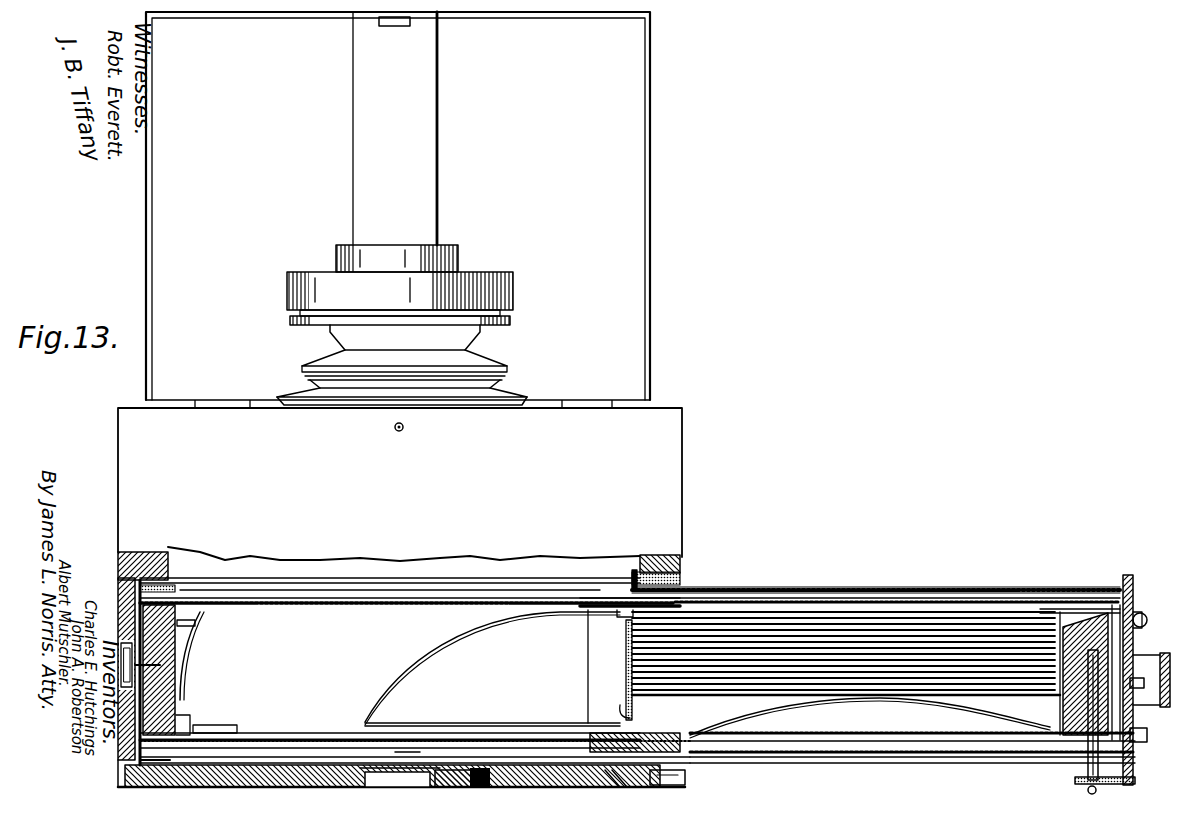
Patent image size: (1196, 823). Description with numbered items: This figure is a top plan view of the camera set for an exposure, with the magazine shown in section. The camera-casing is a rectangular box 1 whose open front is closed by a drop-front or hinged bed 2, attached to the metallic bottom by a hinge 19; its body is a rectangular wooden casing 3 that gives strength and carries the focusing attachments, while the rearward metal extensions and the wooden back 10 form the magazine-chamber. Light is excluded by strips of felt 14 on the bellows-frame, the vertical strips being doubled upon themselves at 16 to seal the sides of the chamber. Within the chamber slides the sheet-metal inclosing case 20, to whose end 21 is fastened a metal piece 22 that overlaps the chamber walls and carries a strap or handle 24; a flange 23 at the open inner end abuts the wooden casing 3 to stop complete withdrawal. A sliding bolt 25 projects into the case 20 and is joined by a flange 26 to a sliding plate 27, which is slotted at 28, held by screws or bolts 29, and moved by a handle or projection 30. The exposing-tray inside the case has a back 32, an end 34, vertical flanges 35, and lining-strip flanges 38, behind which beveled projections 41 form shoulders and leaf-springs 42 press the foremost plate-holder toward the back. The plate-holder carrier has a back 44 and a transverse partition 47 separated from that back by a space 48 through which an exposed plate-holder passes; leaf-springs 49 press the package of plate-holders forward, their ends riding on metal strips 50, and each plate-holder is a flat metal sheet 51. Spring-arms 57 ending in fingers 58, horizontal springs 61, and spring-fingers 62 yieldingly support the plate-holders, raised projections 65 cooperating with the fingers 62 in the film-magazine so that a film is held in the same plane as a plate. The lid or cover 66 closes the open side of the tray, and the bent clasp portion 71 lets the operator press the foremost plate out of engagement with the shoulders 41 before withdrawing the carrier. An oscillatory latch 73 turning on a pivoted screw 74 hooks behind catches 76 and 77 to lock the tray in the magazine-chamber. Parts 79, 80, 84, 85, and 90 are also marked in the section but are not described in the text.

The rectangular box 1 is at (400, 482).
The drop-front or hinged bed 2 is at (398, 206).
The rectangular wooden casing 3 is at (664, 556).
The back 10 is at (232, 787).
The strips of felt 14 is at (510, 590).
The folded portion of felt strips 16 is at (170, 590).
The hinge 19 is at (588, 407).
The sliding inclosing case 20 is at (866, 764).
The end of casing 21 is at (1115, 598).
The rectangular piece of metal 22 is at (1133, 600).
The flange 23 is at (632, 582).
The strap or handle 24 is at (1170, 672).
The sliding bolt 25 is at (1088, 762).
The flange 26 is at (1110, 786).
The sliding plate 27 is at (1134, 780).
The slot 28 is at (1140, 658).
The screws or bolts 29 is at (1148, 734).
The handle or projection 30 is at (1148, 620).
The back of exposing-tray 32 is at (305, 785).
The end of tray 34 is at (176, 650).
The vertical flanges 35 is at (338, 580).
The vertical flanges 38 is at (328, 606).
The beveled projections 41 is at (615, 616).
The leaf-springs 42 is at (452, 648).
The back of plate-holder carrier 44 is at (890, 742).
The transverse partition 47 is at (625, 663).
The space 48 is at (610, 702).
The leaf-springs 49 is at (855, 714).
The horizontal metal strips 50 is at (1058, 712).
The flat sheet of metal 51 is at (474, 731).
The spring-arm 57 is at (846, 653).
The finger 58 is at (188, 630).
The horizontal spring 61 is at (196, 622).
The spring-finger 62 is at (245, 728).
The raised projections 65 is at (630, 740).
The upper rail 66 is at (815, 602).
The bent portion 71 is at (1070, 608).
The oscillatory latch 73 is at (142, 764).
The pivoted screw 74 is at (160, 668).
The catch 76 is at (142, 556).
The catch 77 is at (126, 788).
The opening 79 is at (400, 787).
The strip 80 is at (405, 755).
The block 84 is at (478, 787).
The bar 85 is at (622, 787).
The bracket 90 is at (668, 786).